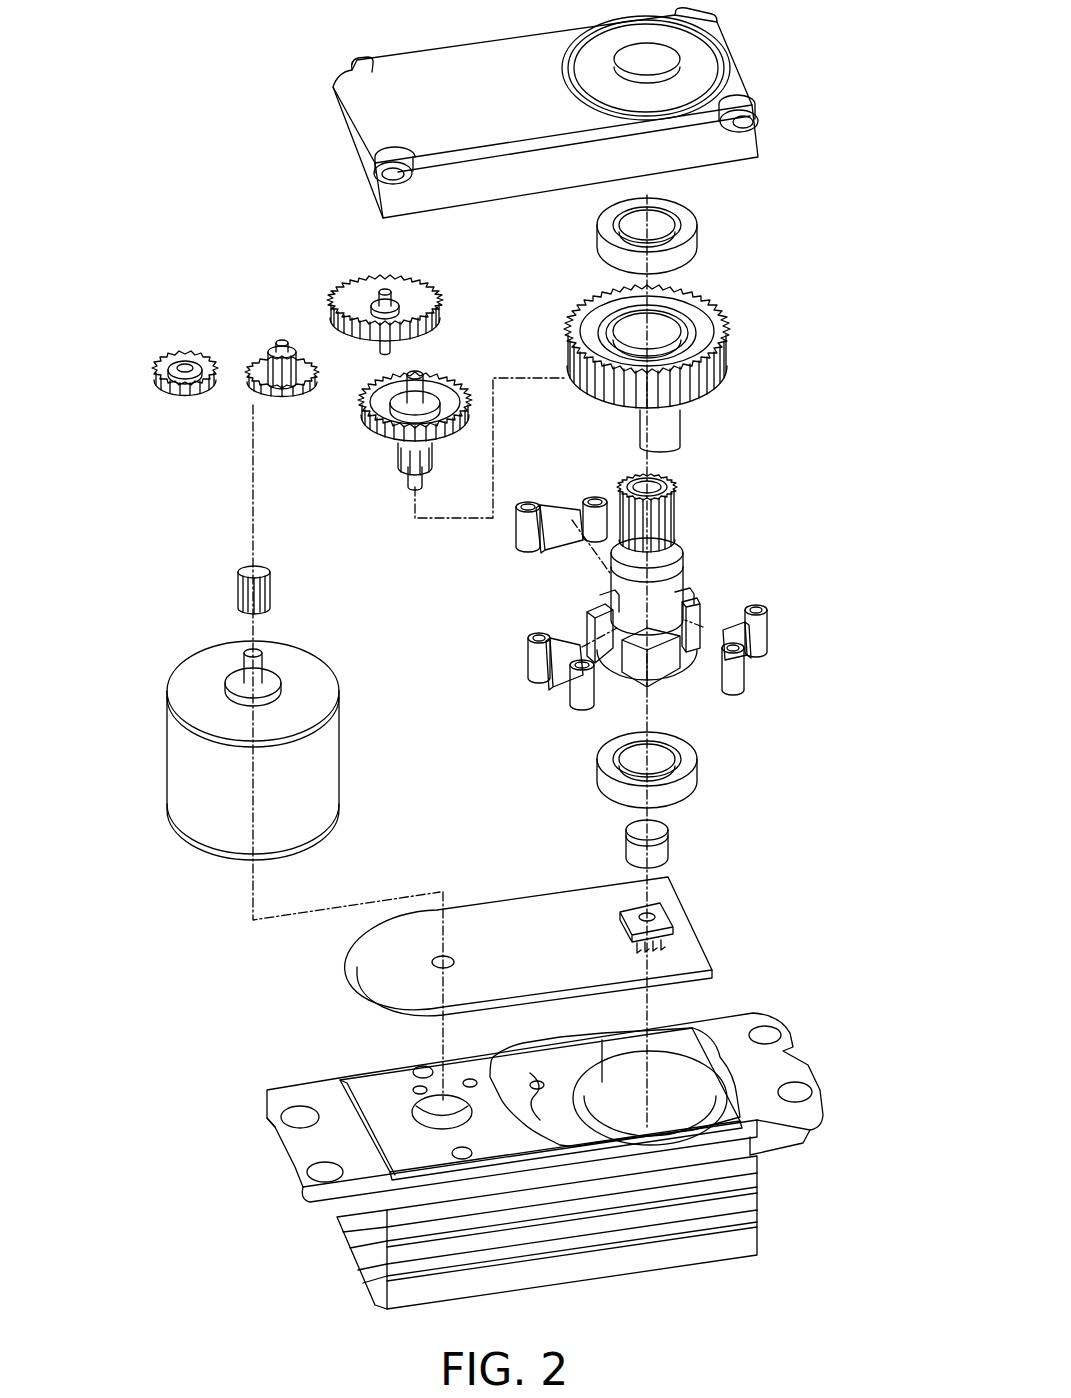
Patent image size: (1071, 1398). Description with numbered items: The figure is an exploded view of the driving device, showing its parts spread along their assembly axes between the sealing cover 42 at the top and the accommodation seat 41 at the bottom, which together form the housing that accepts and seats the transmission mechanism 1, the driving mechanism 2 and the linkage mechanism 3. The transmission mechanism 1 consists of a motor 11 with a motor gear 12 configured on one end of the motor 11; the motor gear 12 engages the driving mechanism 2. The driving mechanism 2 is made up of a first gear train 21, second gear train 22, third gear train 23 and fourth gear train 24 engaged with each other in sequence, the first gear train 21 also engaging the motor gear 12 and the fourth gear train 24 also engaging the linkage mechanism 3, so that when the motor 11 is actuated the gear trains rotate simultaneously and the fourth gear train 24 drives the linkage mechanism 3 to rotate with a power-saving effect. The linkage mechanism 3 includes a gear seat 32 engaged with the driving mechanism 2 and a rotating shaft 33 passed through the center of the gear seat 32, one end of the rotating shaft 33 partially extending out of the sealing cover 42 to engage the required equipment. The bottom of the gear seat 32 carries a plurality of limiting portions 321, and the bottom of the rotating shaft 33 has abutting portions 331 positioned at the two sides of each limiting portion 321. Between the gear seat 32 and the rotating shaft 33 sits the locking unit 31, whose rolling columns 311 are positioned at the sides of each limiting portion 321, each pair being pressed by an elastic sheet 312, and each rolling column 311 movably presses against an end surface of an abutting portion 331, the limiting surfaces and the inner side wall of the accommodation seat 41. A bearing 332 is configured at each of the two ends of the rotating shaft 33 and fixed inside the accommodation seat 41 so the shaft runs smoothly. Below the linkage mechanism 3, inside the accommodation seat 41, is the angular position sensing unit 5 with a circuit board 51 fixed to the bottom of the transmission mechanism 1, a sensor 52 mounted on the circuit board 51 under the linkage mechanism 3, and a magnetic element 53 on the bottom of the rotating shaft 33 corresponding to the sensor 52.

The transmission mechanism 1 is at (140, 698).
The motor 11 is at (182, 797).
The motor gear 12 is at (238, 586).
The driving mechanism 2 is at (182, 193).
The first gear train 21 is at (172, 350).
The second gear train 22 is at (277, 332).
The third gear train 23 is at (360, 268).
The fourth gear train 24 is at (453, 373).
The linkage mechanism 3 is at (786, 472).
The locking unit 31 is at (512, 547).
The rolling column 311 is at (529, 502).
The elastic sheet 312 is at (578, 512).
The gear seat 32 is at (727, 318).
The limiting portion 321 is at (673, 420).
The rotating shaft 33 is at (667, 542).
The abutting portion 331 is at (681, 668).
The bearing 332 is at (697, 240).
The accommodation seat 41 is at (673, 1263).
The sealing cover 42 is at (723, 157).
The angular position sensing unit 5 is at (358, 992).
The circuit board 51 is at (523, 913).
The sensor 52 is at (663, 920).
The magnetic element 53 is at (640, 847).